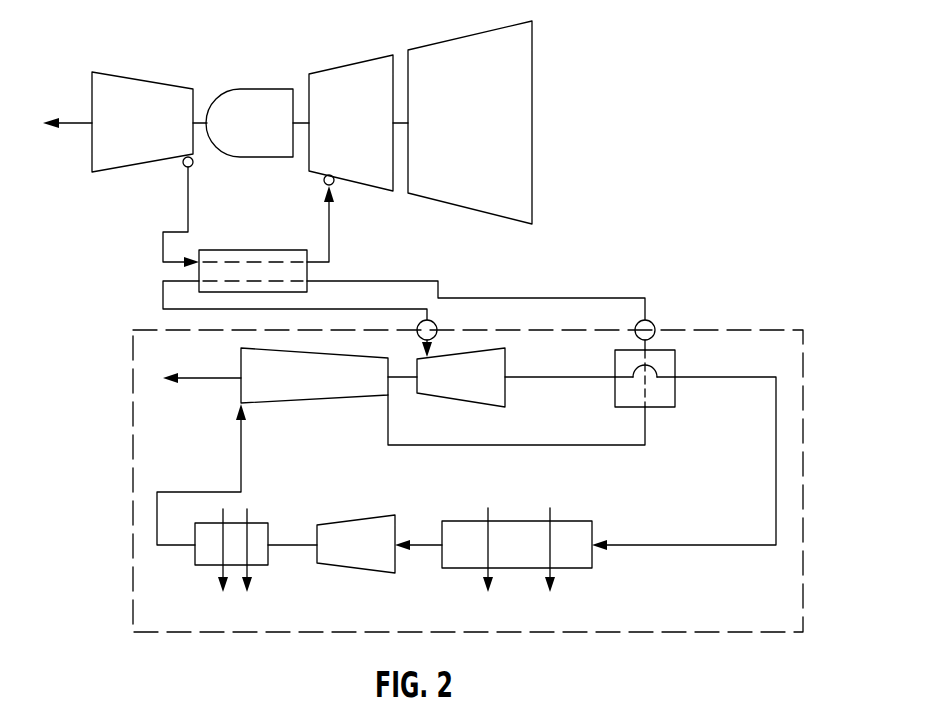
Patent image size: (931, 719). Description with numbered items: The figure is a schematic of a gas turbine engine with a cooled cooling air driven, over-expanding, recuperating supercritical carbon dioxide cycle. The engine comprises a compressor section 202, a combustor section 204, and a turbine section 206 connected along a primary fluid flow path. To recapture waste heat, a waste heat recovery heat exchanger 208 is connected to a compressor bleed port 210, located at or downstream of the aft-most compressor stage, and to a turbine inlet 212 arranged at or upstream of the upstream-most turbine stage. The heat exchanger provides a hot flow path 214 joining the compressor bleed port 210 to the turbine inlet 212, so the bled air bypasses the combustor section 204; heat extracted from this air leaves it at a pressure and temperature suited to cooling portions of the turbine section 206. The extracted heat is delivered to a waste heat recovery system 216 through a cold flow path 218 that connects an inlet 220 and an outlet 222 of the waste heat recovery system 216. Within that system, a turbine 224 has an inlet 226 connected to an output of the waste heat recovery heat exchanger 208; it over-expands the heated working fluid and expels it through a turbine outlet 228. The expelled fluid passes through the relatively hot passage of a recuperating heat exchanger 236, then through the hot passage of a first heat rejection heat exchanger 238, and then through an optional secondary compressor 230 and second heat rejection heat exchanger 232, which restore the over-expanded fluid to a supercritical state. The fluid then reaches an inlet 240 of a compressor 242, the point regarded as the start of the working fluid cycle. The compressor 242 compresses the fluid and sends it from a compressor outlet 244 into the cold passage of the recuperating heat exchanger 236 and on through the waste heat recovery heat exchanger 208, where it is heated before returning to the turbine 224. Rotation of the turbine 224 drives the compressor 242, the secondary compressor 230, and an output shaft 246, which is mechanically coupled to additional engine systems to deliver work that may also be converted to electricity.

The compressor section 202 is at (143, 79).
The combustor section 204 is at (241, 88).
The turbine section 206 is at (478, 18).
The waste heat recovery heat exchanger 208 is at (243, 250).
The compressor bleed port 210 is at (184, 166).
The turbine inlet 212 is at (335, 183).
The hot flow path 214 is at (223, 262).
The waste heat recovery system 216 is at (772, 330).
The cold flow path 218 is at (222, 281).
The inlet of the waste heat recovery system 220 is at (438, 327).
The outlet of the waste heat recovery system 222 is at (653, 324).
The turbine 224 is at (462, 403).
The turbine inlet 226 is at (415, 365).
The turbine outlet 228 is at (508, 381).
The secondary compressor 230 is at (357, 571).
The second heat rejection heat exchanger 232 is at (210, 566).
The recuperating heat exchanger 236 is at (665, 408).
The first heat rejection heat exchanger 238 is at (572, 521).
The inlet of the compressor 240 is at (240, 402).
The compressor 242 is at (292, 405).
The compressor outlet 244 is at (386, 397).
The output shaft 246 is at (216, 380).